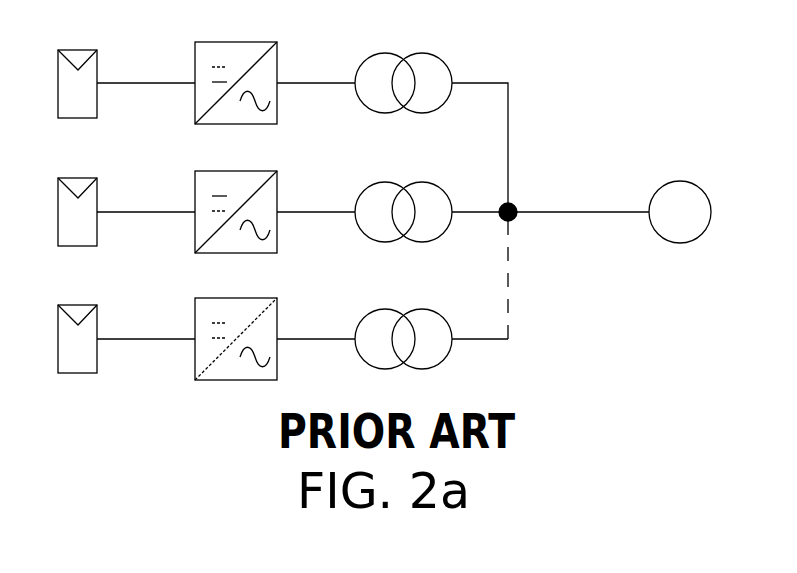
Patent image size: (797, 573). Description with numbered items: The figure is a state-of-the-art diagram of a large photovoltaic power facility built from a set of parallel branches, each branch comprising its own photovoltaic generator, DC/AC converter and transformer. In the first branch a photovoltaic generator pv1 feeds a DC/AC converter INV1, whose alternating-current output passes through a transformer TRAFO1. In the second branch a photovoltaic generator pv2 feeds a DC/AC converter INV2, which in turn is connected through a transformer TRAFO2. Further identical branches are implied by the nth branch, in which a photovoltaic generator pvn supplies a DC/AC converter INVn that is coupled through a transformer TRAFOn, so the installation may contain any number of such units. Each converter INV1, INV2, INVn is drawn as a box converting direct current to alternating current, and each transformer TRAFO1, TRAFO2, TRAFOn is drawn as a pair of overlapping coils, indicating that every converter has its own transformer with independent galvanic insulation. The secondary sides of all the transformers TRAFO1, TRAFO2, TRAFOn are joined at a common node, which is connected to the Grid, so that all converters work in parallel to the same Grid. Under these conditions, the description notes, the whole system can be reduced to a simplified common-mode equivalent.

The photovoltaic generator pv1 is at (100, 65).
The photovoltaic generator pv2 is at (100, 194).
The photovoltaic generator pvn is at (100, 321).
The DC/AC converter INV1 is at (236, 63).
The DC/AC converter INV2 is at (236, 192).
The DC/AC converter INVn is at (236, 319).
The transformer TRAFO1 is at (398, 65).
The transformer TRAFO2 is at (398, 194).
The transformer TRAFOn is at (398, 321).
The grid Grid is at (680, 195).